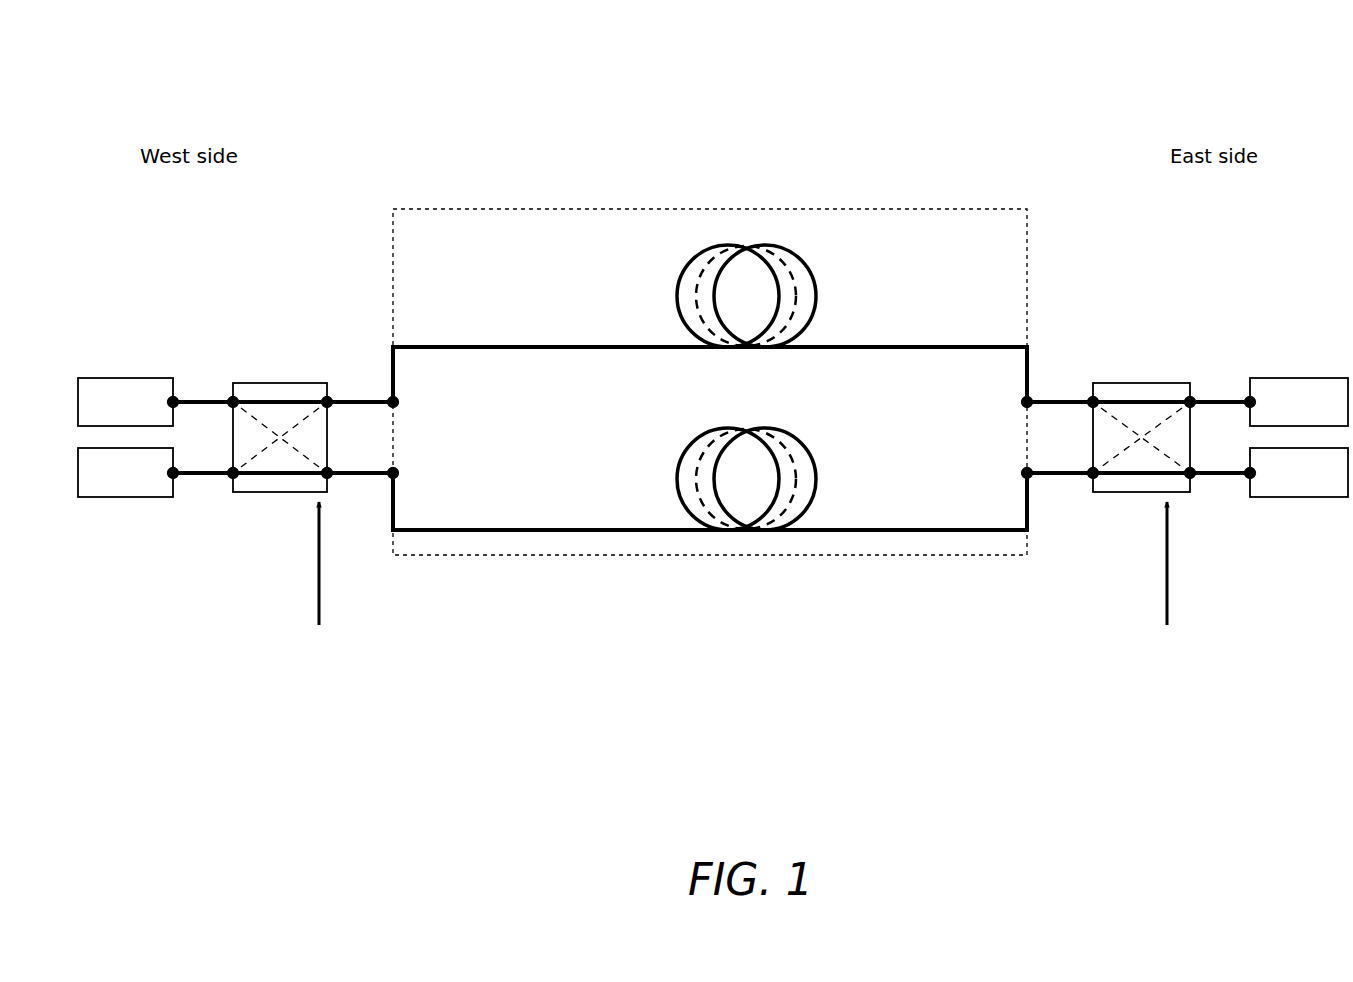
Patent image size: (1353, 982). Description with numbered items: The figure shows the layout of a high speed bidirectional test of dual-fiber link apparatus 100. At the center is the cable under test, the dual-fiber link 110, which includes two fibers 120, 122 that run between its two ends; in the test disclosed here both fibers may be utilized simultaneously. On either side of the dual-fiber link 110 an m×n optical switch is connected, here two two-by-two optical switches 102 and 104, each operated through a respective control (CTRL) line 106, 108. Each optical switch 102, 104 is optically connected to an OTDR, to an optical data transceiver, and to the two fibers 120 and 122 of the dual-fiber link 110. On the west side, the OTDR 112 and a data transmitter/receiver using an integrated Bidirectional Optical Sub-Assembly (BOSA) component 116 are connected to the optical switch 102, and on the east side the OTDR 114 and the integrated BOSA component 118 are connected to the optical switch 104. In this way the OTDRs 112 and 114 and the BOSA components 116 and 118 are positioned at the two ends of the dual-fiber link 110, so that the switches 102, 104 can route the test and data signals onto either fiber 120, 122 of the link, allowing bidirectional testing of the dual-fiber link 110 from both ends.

The high speed bidirectional test of dual-fiber link apparatus 100 is at (392, 114).
The optical switch 102 is at (282, 495).
The optical switch 104 is at (1150, 497).
The control line 106 is at (313, 575).
The control line 108 is at (1163, 575).
The dual-fiber link 110 is at (573, 205).
The OTDR 112 is at (120, 372).
The OTDR 114 is at (1320, 373).
The integrated Bidirectional Optical Sub-Assembly (BOSA) component 116 is at (123, 500).
The integrated Bidirectional Optical Sub-Assembly (BOSA) component 118 is at (1325, 500).
The fiber 120 is at (623, 345).
The fiber 122 is at (627, 525).